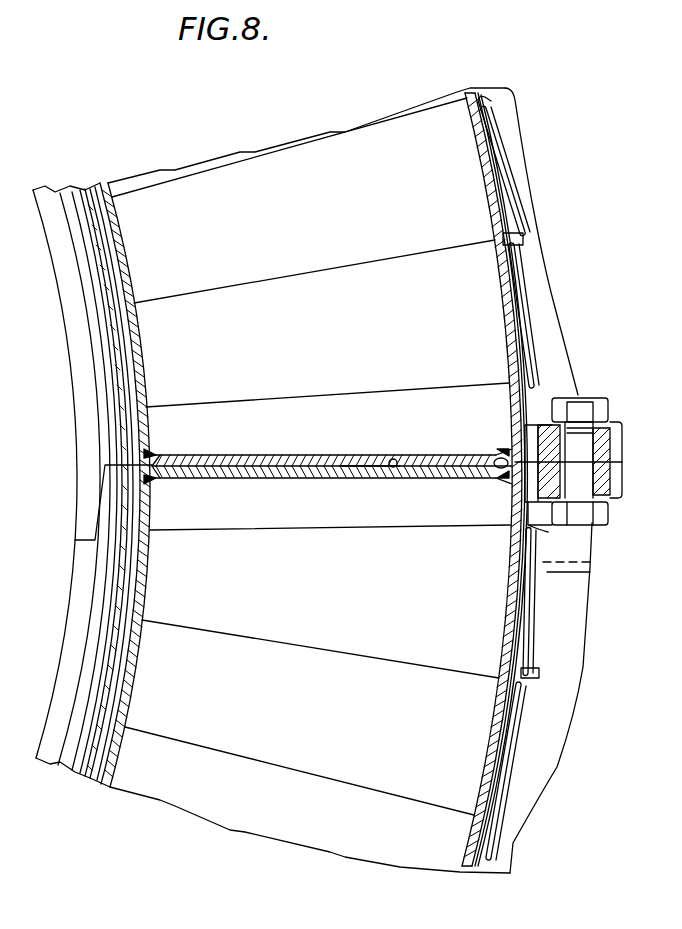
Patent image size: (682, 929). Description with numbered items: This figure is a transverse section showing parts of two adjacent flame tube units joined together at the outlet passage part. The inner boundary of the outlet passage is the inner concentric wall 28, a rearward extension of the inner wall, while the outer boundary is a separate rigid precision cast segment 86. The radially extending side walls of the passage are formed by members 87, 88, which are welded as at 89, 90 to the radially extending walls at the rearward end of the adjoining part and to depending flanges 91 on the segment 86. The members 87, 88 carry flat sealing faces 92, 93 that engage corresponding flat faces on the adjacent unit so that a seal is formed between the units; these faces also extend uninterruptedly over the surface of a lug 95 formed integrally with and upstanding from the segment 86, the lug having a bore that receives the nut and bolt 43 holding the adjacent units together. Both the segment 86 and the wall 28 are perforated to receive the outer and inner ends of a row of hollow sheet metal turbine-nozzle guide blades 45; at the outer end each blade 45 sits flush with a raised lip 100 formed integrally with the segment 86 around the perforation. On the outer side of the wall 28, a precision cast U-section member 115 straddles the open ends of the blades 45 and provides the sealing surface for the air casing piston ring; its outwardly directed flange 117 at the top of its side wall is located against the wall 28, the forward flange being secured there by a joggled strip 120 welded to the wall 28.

The inner concentric wall 28 is at (140, 342).
The nut and bolt 43 is at (578, 482).
The turbine-nozzle guide blades 45 is at (232, 173).
The rigid precision cast segment 86 is at (505, 310).
The member 87 is at (305, 470).
The member 88 is at (310, 453).
The weld 89 is at (502, 470).
The weld 90 is at (500, 453).
The depending flanges 91 is at (503, 450).
The flat sealing face 92 is at (393, 467).
The flat sealing face 93 is at (363, 462).
The lug 95 is at (610, 485).
The raised lip 100 is at (517, 258).
The U-section member 115 is at (98, 444).
The outwardly directed flange 117 is at (107, 248).
The joggled strip 120 is at (118, 360).